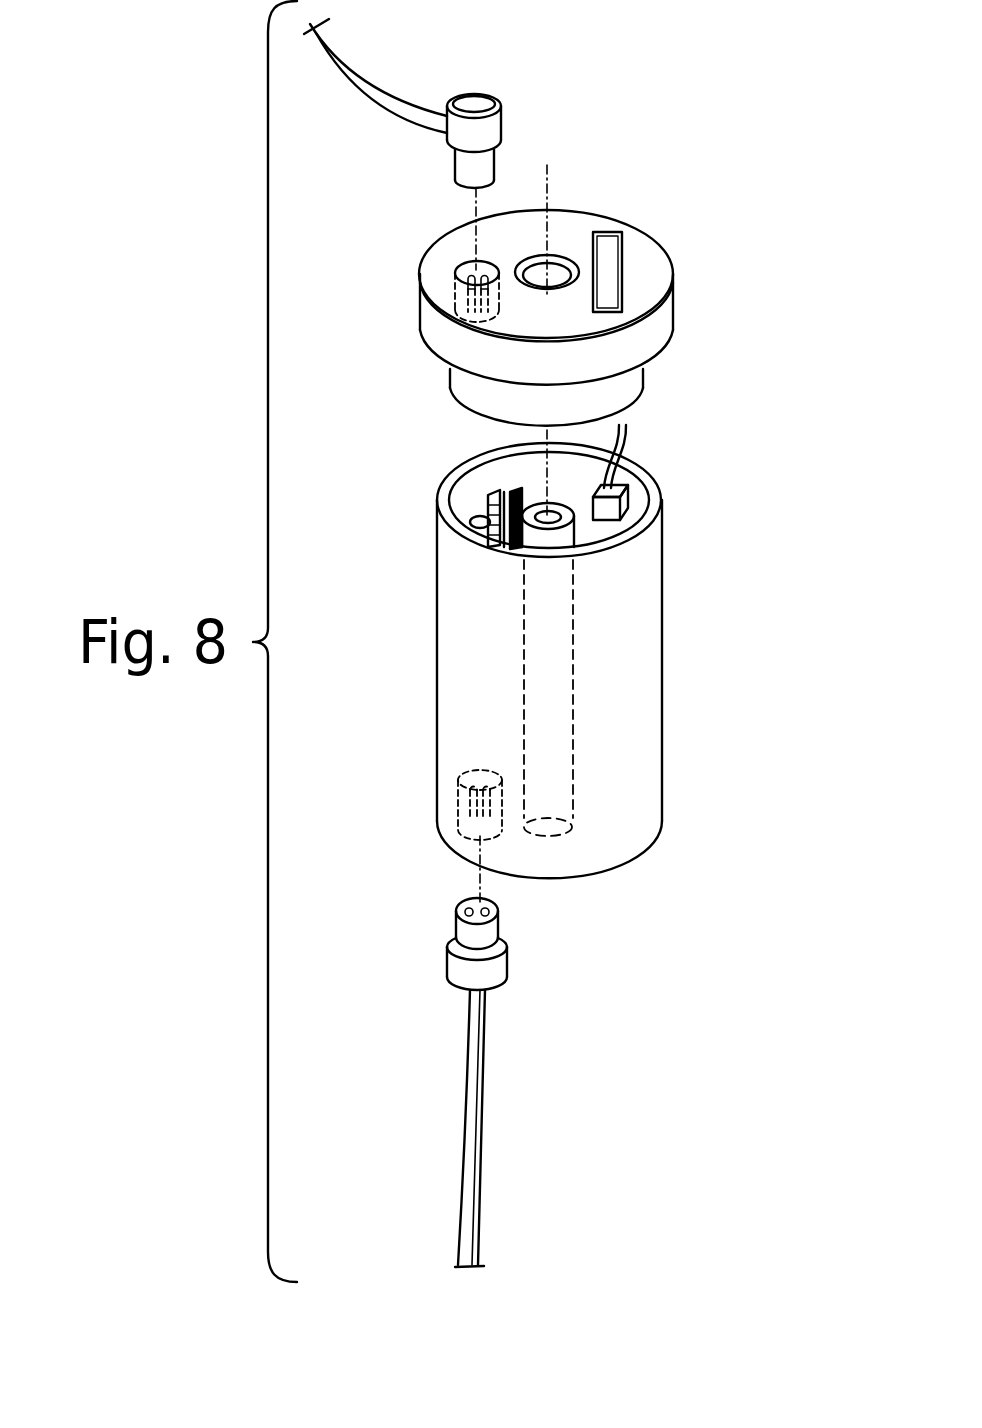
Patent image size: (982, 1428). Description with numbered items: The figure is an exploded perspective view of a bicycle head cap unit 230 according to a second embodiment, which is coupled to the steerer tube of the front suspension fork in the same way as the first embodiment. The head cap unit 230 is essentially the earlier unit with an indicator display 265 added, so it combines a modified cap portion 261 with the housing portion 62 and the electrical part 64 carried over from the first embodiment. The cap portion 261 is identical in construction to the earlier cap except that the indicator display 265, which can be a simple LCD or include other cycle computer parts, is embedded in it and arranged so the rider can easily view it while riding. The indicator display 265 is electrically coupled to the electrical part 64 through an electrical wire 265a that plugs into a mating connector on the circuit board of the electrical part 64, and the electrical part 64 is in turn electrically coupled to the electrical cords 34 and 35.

The electrical cord 34 is at (352, 62).
The head cap unit 230 is at (634, 152).
The cap portion 261 is at (645, 233).
The indicator display 265 is at (622, 286).
The electrical wire 265a is at (627, 502).
The housing portion 62 is at (662, 673).
The electrical part 64 is at (487, 507).
The electrical cord 35 is at (486, 1057).